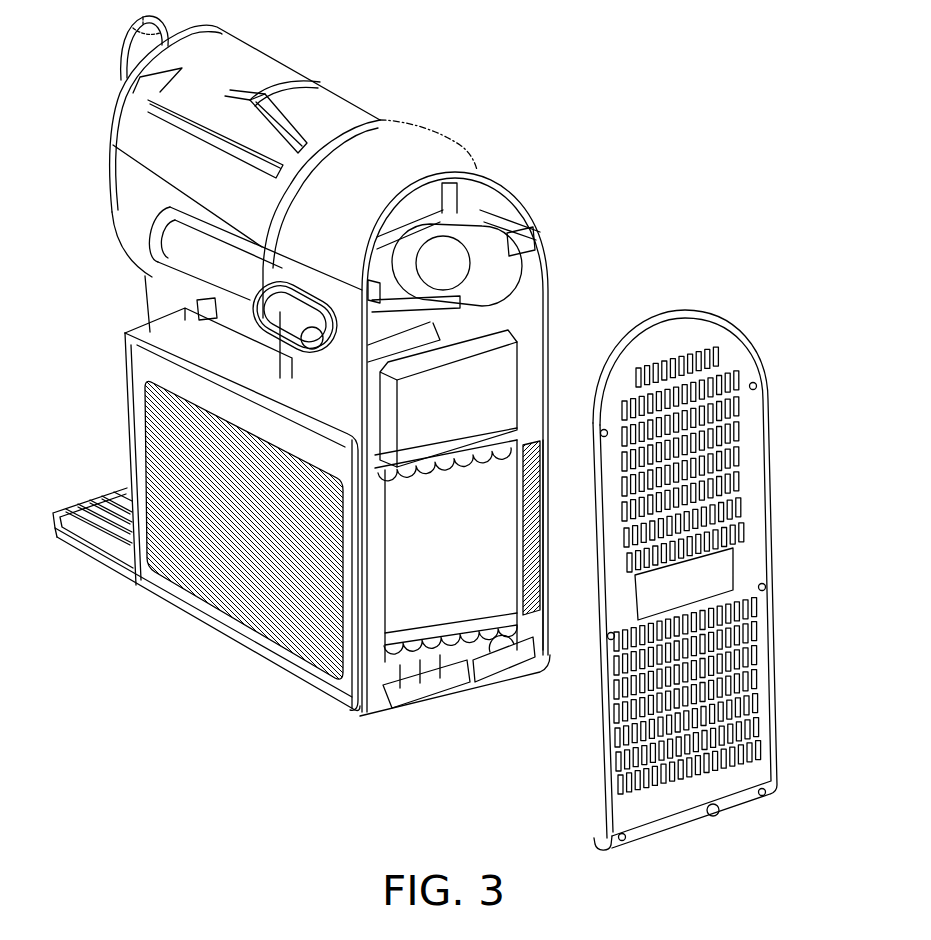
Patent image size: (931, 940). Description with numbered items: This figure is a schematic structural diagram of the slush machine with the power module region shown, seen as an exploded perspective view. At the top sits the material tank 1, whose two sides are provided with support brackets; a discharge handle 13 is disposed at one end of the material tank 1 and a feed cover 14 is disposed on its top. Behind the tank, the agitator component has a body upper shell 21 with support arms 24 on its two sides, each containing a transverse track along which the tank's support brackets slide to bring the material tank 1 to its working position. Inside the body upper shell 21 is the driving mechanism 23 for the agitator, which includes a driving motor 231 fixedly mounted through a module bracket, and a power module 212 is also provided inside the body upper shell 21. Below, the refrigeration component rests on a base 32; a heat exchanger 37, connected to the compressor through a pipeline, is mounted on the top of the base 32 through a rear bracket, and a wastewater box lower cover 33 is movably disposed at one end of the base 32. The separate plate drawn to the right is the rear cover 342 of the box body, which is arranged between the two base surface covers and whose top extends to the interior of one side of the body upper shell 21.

The material tank 1 is at (158, 150).
The discharge handle 13 is at (118, 42).
The feed cover 14 is at (308, 113).
The body upper shell 21 is at (380, 185).
The driving mechanism 23 is at (437, 243).
The driving motor 231 is at (440, 270).
The power module 212 is at (465, 405).
The support arm 24 is at (205, 255).
The wastewater box lower cover 33 is at (100, 565).
The heat exchanger 37 is at (440, 575).
The base 32 is at (420, 690).
The rear cover 342 is at (748, 532).